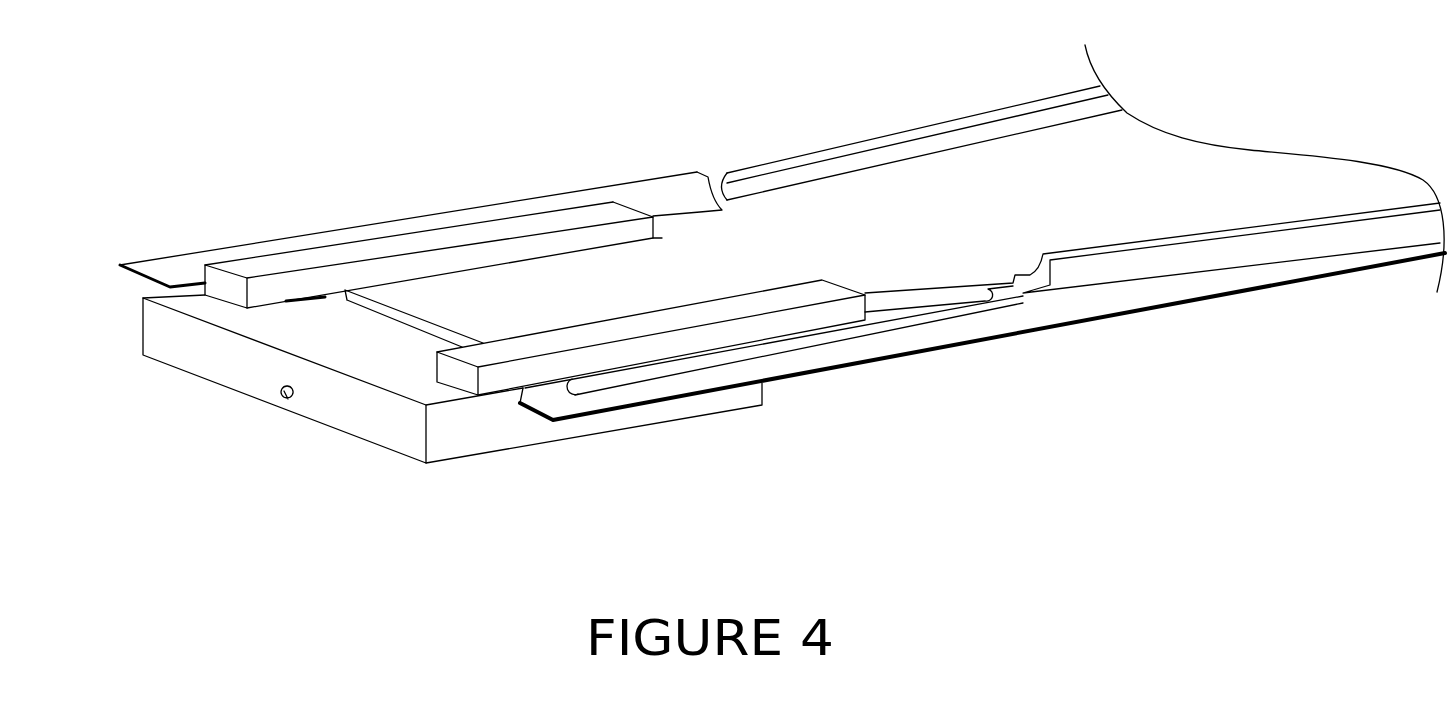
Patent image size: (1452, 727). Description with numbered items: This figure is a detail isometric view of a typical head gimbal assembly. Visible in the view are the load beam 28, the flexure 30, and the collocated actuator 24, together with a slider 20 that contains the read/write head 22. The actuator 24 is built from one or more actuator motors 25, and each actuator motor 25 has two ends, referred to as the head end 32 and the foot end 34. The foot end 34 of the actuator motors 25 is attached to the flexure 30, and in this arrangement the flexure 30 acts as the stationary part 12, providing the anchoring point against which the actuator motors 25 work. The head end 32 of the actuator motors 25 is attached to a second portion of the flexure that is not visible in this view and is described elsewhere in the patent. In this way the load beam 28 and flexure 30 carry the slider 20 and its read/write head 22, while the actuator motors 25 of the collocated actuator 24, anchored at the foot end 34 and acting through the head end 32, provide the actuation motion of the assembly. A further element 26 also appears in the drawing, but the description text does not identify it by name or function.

The stationary part 12 is at (982, 319).
The slider 20 is at (400, 430).
The read/write head 22 is at (278, 402).
The collocated actuator 24 is at (433, 177).
The actuator motor 25 is at (555, 342).
The load beam 26 is at (1046, 149).
The load beam 28 is at (946, 227).
The flexure 30 is at (818, 362).
The head end 32 is at (247, 258).
The foot end 34 is at (553, 214).